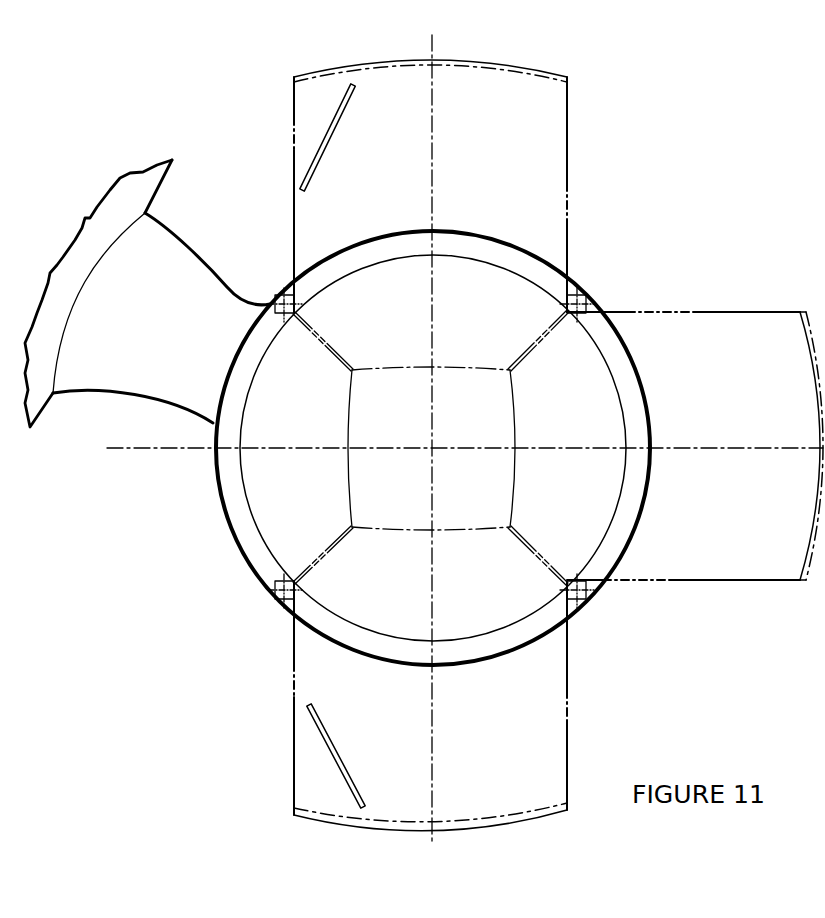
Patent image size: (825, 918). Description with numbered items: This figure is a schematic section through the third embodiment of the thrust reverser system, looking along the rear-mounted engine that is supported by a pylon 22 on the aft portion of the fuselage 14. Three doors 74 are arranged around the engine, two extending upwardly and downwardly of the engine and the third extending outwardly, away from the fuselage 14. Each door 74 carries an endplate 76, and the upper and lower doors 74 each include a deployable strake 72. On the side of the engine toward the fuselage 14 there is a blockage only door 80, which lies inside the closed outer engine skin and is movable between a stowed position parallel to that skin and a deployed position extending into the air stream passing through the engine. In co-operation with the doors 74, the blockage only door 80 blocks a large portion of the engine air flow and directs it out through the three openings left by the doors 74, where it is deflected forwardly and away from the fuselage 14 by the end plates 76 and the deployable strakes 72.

The fuselage 14 is at (47, 407).
The pylon 22 is at (110, 388).
The deployable strake 72 is at (347, 90).
The door 74 is at (570, 130).
The endplate 76 is at (528, 70).
The blockage only door 80 is at (270, 503).